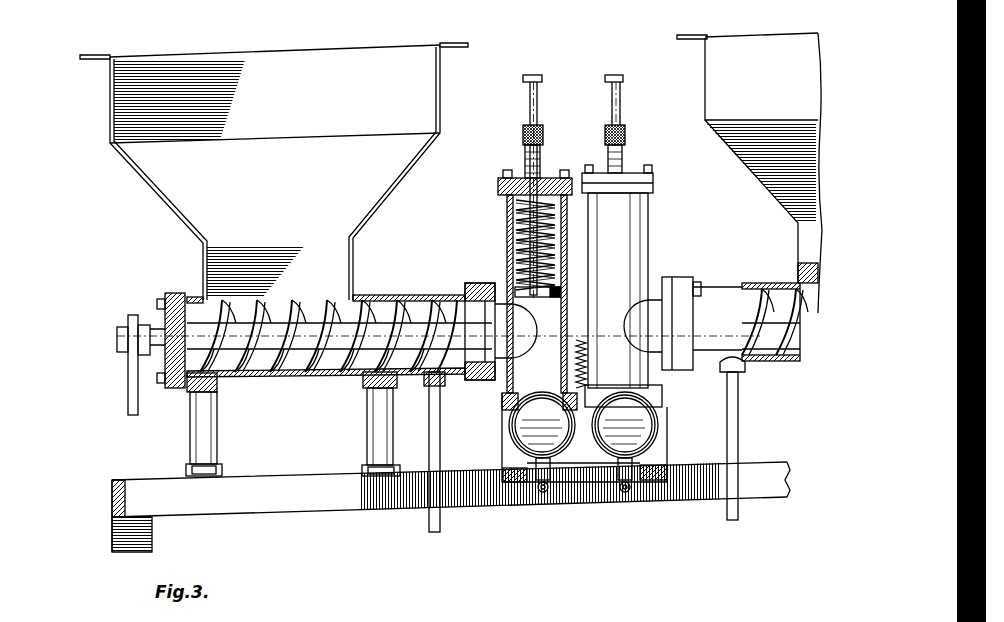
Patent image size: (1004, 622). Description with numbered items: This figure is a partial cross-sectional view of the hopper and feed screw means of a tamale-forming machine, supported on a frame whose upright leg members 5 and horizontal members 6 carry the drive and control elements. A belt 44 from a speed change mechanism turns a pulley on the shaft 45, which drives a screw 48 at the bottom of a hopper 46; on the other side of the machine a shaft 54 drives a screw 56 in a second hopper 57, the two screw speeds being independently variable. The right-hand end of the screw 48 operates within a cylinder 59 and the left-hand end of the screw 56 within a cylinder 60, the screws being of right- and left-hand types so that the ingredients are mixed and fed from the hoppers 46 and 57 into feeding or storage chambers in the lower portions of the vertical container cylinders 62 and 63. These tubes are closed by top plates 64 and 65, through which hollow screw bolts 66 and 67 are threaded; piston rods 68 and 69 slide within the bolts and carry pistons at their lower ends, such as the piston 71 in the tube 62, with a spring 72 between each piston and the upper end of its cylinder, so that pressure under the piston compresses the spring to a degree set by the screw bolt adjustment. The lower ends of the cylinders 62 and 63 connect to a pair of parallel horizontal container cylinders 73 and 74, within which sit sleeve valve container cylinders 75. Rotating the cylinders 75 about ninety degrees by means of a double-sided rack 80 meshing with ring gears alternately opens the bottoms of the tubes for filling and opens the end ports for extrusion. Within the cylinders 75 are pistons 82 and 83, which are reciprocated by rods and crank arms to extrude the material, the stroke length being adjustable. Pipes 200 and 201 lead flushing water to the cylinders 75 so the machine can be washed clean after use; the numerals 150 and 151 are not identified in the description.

The upright leg members 5 is at (147, 539).
The horizontal members 6 is at (293, 505).
The belt 44 is at (128, 388).
The shaft 45 is at (117, 342).
The hopper 46 is at (111, 129).
The screw 48 is at (298, 307).
The shaft 54 is at (803, 358).
The screw 56 is at (778, 352).
The hopper 57 is at (766, 177).
The cylinder 59 is at (405, 297).
The cylinder 60 is at (762, 283).
The vertical container cylinder 62 is at (507, 220).
The vertical container cylinder 63 is at (622, 232).
The top plate 64 is at (498, 186).
The top plate 65 is at (653, 183).
The hollow screw bolt 66 is at (525, 155).
The hollow screw bolt 67 is at (625, 150).
The piston rod 68 is at (528, 98).
The piston rod 69 is at (622, 100).
The piston 71 is at (561, 292).
The spring 72 is at (520, 236).
The horizontal container cylinder 73 is at (509, 425).
The horizontal container cylinder 74 is at (660, 432).
The sleeve valve container cylinder 75 is at (513, 447).
The double-sided rack 80 is at (577, 340).
The piston 82 is at (623, 406).
The piston 83 is at (543, 406).
The fitting 150 is at (653, 617).
The fitting 151 is at (587, 617).
The pipe 200 is at (543, 496).
The pipe 201 is at (625, 496).